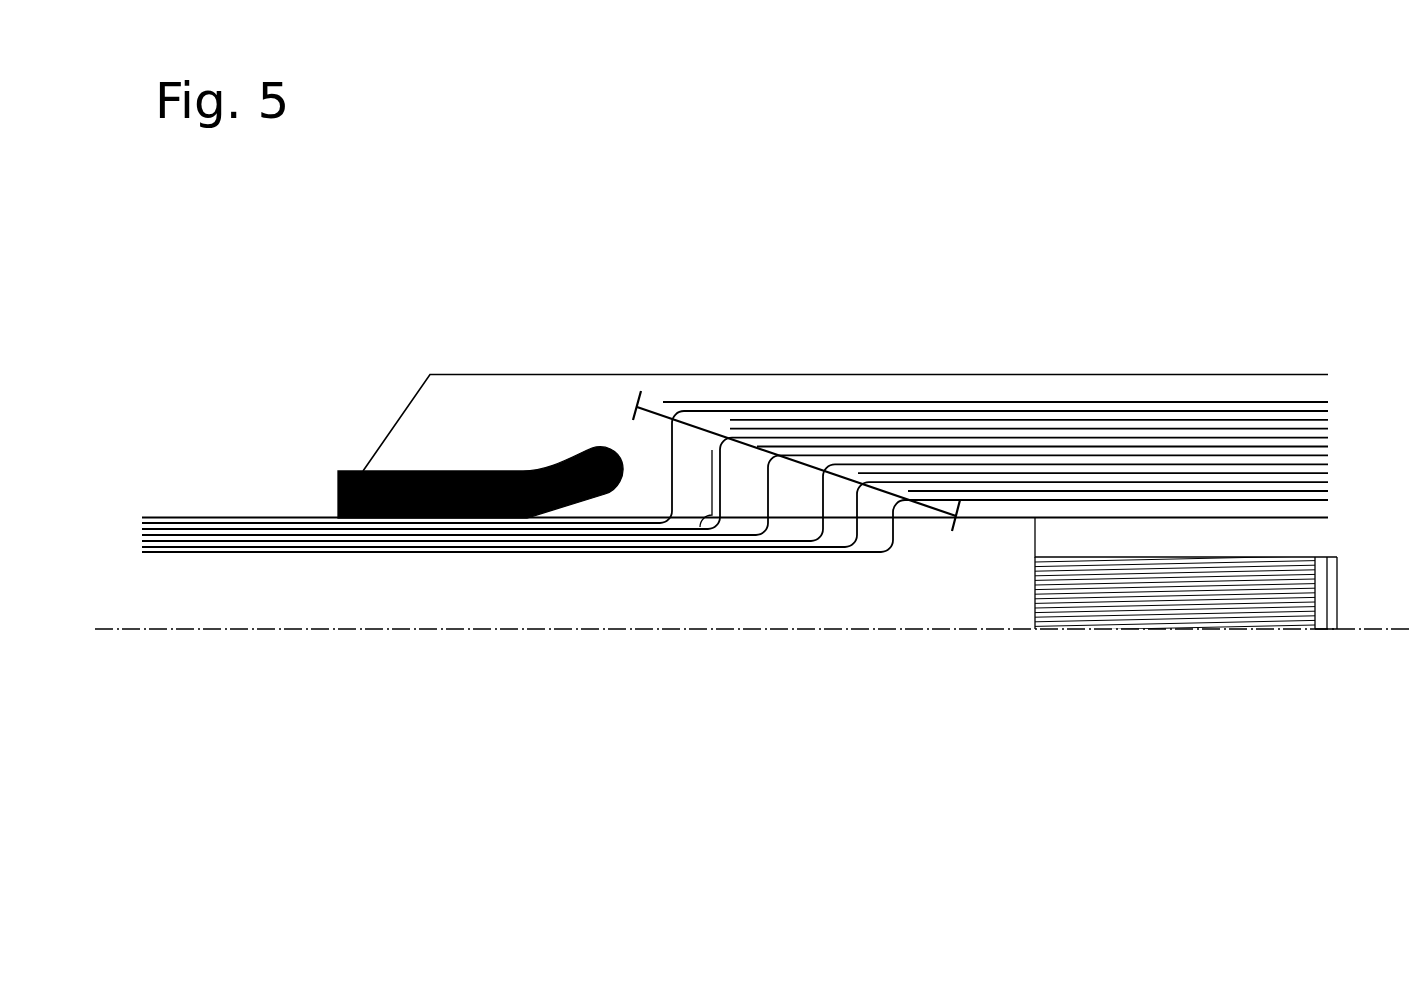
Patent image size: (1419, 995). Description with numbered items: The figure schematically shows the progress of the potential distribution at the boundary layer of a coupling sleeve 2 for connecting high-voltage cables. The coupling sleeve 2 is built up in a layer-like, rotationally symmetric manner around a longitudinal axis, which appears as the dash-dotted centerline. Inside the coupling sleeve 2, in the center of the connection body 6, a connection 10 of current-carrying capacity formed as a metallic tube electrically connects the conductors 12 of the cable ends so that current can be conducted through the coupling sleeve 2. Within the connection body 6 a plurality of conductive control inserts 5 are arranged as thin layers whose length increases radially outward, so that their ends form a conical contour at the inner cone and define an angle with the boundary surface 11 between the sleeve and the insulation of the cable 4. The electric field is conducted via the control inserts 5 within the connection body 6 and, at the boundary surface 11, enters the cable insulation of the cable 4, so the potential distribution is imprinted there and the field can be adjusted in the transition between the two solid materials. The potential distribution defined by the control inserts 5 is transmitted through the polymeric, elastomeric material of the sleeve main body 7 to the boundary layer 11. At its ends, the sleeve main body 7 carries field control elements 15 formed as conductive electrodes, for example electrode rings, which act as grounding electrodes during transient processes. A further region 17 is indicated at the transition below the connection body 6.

The coupling sleeve 2 is at (1018, 268).
The cable 4 is at (547, 597).
The control inserts 5 is at (947, 447).
The connection body 6 is at (1274, 317).
The sleeve main body 7 is at (518, 417).
The connection of current-carrying capacity 10 is at (1248, 537).
The boundary surface 11 is at (706, 526).
The conductors 12 is at (1220, 575).
The field control elements 15 is at (440, 470).
The transition region 17 is at (893, 537).